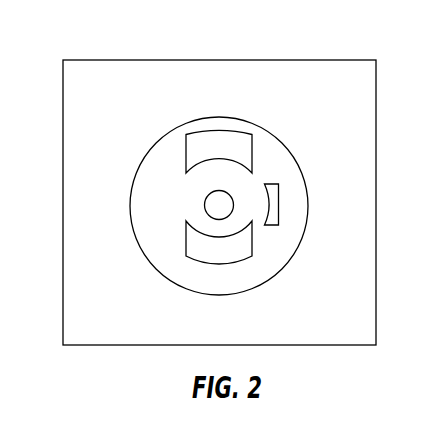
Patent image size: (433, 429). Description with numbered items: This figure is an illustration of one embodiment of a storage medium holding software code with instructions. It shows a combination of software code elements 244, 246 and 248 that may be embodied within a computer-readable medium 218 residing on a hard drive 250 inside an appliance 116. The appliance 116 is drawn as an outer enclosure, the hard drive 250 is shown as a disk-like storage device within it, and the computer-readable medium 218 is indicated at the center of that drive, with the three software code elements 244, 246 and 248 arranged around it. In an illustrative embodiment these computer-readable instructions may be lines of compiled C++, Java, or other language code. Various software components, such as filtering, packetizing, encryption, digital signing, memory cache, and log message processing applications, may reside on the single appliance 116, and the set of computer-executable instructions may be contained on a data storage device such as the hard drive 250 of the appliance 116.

The appliance 116 is at (117, 74).
The hard drive 250 is at (152, 165).
The computer-readable medium 218 is at (179, 217).
The software code element 244 is at (220, 130).
The software code element 248 is at (218, 265).
The software code element 246 is at (279, 204).